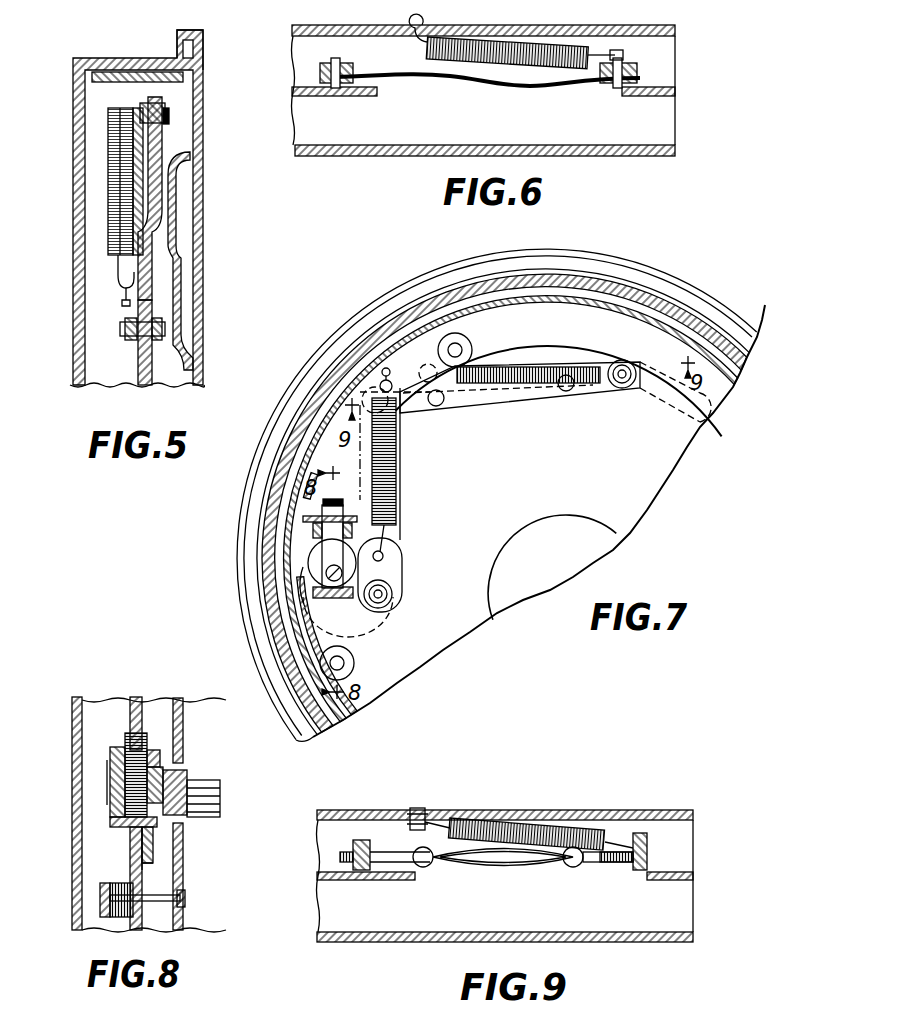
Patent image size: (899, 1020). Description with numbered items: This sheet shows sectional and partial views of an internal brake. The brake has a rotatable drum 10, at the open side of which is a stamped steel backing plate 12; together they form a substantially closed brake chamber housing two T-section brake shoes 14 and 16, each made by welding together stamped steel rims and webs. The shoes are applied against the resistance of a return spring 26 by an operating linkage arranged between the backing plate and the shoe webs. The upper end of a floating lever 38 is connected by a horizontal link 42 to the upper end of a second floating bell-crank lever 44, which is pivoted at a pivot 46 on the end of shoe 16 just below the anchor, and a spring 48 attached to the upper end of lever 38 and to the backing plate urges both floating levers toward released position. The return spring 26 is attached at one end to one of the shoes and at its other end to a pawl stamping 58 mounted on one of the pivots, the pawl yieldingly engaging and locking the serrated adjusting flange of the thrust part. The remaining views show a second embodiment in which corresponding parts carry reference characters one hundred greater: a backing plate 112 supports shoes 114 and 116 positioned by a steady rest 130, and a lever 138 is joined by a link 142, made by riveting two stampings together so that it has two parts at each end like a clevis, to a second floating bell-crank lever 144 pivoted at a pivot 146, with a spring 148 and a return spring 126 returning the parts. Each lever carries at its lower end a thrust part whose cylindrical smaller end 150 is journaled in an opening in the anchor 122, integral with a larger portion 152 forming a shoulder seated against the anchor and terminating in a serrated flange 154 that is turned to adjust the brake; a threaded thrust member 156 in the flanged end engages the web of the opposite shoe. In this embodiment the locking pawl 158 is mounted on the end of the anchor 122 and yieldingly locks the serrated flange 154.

In FIG. 5, the rotatable drum 10 is at (75, 232).
In FIG. 6, the rotatable drum 10 is at (617, 147).
In FIG. 7, the rotatable drum 10 is at (437, 310).
In FIG. 8, the rotatable drum 10 is at (72, 737).
In FIG. 9, the rotatable drum 10 is at (380, 932).
In FIG. 5, the backing plate 12 is at (200, 100).
In FIG. 6, the backing plate 12 is at (657, 32).
In FIG. 5, the brake shoe 14 is at (182, 172).
In FIG. 6, the brake shoe 14 is at (658, 92).
In FIG. 5, the brake shoe 16 is at (134, 372).
In FIG. 5, the return spring 26 is at (118, 164).
In FIG. 6, the lever 38 is at (633, 72).
In FIG. 5, the horizontal link 42 is at (130, 137).
In FIG. 6, the horizontal link 42 is at (520, 92).
In FIG. 5, the second floating bell-crank lever 44 is at (160, 155).
In FIG. 6, the second floating bell-crank lever 44 is at (352, 72).
In FIG. 5, the pivot 46 is at (128, 332).
In FIG. 6, the spring 48 is at (525, 43).
In FIG. 5, the pawl stamping 58 is at (124, 298).
In FIG. 7, the backing plate 112 is at (652, 490).
In FIG. 8, the backing plate 112 is at (183, 880).
In FIG. 9, the backing plate 112 is at (590, 815).
In FIG. 7, the brake shoe 114 is at (610, 330).
In FIG. 8, the brake shoe 114 is at (120, 700).
In FIG. 9, the brake shoe 114 is at (690, 870).
In FIG. 7, the brake shoe 116 is at (373, 668).
In FIG. 8, the brake shoe 116 is at (140, 843).
In FIG. 7, the anchor 122 is at (313, 553).
In FIG. 8, the anchor 122 is at (187, 790).
In FIG. 7, the return spring 126 is at (398, 453).
In FIG. 7, the steady rest 130 is at (327, 658).
In FIG. 8, the steady rest 130 is at (105, 898).
In FIG. 7, the lever 138 is at (653, 403).
In FIG. 9, the lever 138 is at (650, 848).
In FIG. 7, the link 142 is at (475, 395).
In FIG. 9, the link 142 is at (490, 858).
In FIG. 7, the second floating bell-crank lever 144 is at (392, 533).
In FIG. 8, the second floating bell-crank lever 144 is at (153, 837).
In FIG. 9, the second floating bell-crank lever 144 is at (353, 855).
In FIG. 7, the pivot 146 is at (383, 597).
In FIG. 7, the spring 148 is at (507, 377).
In FIG. 9, the spring 148 is at (490, 825).
In FIG. 7, the cylindrical smaller end 150 is at (318, 593).
In FIG. 8, the cylindrical smaller end 150 is at (123, 823).
In FIG. 7, the larger portion 152 is at (312, 538).
In FIG. 8, the larger portion 152 is at (163, 765).
In FIG. 7, the serrated flange 154 is at (305, 517).
In FIG. 8, the serrated flange 154 is at (157, 755).
In FIG. 7, the threaded thrust member 156 is at (335, 500).
In FIG. 8, the threaded thrust member 156 is at (128, 750).
In FIG. 7, the locking pawl 158 is at (327, 560).
In FIG. 8, the locking pawl 158 is at (110, 778).